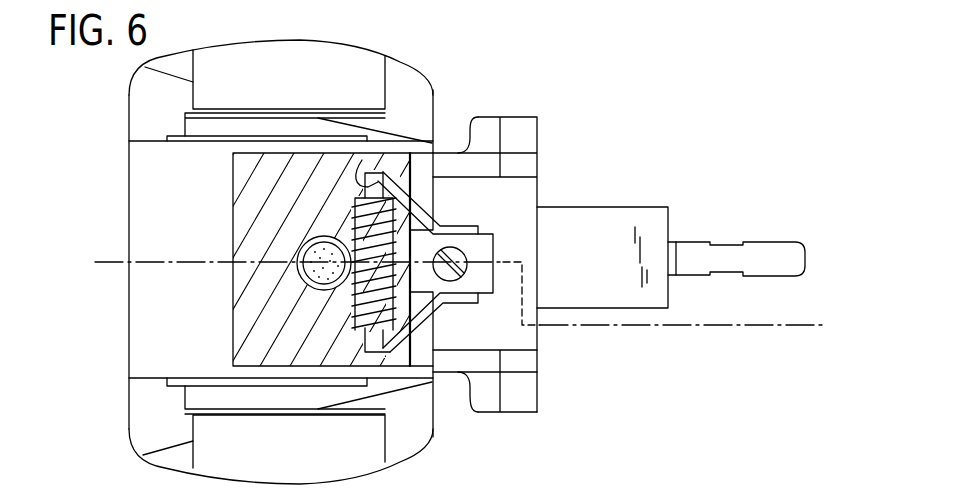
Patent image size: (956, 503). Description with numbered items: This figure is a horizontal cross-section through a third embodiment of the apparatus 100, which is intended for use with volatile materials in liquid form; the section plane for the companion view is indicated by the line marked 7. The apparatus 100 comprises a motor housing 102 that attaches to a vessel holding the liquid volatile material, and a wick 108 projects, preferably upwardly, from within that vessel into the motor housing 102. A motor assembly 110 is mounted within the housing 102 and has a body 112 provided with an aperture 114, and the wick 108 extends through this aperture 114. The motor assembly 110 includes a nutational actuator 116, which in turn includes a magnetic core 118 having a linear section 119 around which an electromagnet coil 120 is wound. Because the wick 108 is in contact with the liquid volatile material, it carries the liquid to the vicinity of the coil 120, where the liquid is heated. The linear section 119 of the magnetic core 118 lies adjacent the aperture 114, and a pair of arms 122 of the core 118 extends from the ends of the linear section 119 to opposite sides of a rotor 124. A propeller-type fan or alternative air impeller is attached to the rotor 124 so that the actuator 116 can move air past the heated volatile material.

The apparatus 100 is at (583, 148).
The motor housing 102 is at (522, 390).
The wick 108 is at (318, 255).
The motor assembly 110 is at (275, 193).
The body 112 is at (129, 352).
The aperture 114 is at (307, 284).
The nutational actuator 116 is at (380, 210).
The magnetic core 118 is at (422, 318).
The linear section 119 is at (362, 160).
The electromagnet coil 120 is at (362, 330).
The arms 122 is at (465, 228).
The rotor 124 is at (464, 254).
The section line 7- 7 is at (796, 332).